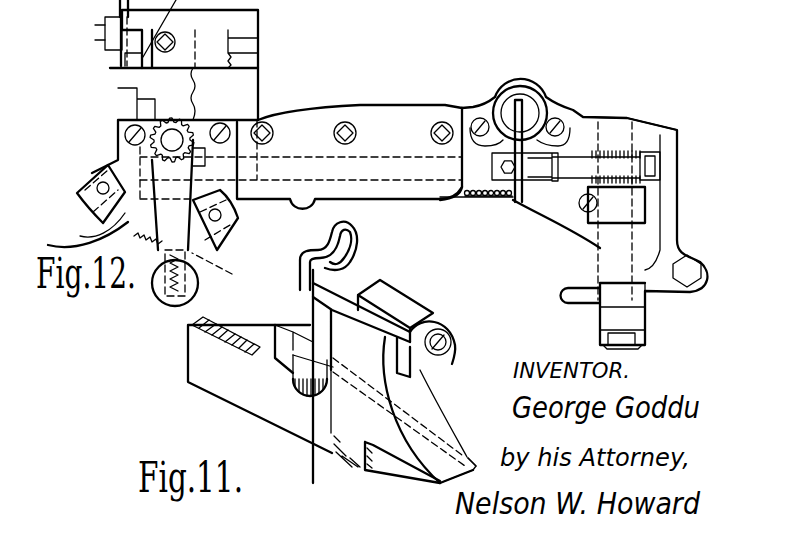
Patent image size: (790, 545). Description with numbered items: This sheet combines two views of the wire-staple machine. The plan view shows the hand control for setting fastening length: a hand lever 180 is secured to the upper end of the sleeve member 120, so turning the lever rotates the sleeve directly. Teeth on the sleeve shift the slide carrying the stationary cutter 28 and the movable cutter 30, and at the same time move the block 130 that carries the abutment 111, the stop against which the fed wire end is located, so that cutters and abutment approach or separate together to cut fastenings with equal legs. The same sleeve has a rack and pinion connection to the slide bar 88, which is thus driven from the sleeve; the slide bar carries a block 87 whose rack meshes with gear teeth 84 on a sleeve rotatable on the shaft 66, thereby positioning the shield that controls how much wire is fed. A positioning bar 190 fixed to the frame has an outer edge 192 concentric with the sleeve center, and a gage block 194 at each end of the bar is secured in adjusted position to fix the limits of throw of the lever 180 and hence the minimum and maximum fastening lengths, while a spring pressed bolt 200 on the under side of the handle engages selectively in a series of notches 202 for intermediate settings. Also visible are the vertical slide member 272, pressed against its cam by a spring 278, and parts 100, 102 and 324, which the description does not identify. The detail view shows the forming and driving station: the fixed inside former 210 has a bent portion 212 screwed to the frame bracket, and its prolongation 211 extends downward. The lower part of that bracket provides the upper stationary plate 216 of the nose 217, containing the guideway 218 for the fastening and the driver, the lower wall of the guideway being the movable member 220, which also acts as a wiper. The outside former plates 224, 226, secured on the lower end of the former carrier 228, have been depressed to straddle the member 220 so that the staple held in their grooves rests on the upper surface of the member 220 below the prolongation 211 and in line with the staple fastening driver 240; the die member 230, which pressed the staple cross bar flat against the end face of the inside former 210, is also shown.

In FIG. 12, the cutter 28 is at (112, 65).
In FIG. 12, the cutter 30 is at (110, 66).
In FIG. 12, the abutment 111 is at (134, 88).
In FIG. 12, the block 130 is at (148, 119).
In FIG. 12, the sleeve member 120 is at (172, 128).
In FIG. 12, the slide bar 88 is at (300, 160).
In FIG. 12, the gage block 194 is at (80, 200).
In FIG. 12, the positioning bar 190 is at (82, 236).
In FIG. 12, the outer edge 192 is at (50, 245).
In FIG. 12, the hand lever 180 is at (141, 239).
In FIG. 12, the spring pressed bolt 200 is at (227, 269).
In FIG. 12, the notches 202 is at (155, 252).
In FIG. 12, the vertical slide member 272 is at (537, 105).
In FIG. 12, the spring 278 is at (503, 200).
In FIG. 12, the shaft 66 is at (618, 125).
In FIG. 12, the block 87 is at (622, 168).
In FIG. 12, the gear teeth 84 is at (603, 217).
In FIG. 12, the lever 100 is at (577, 303).
In FIG. 12, the nut 102 is at (625, 313).
In FIG. 12, the part (cut off) 324 is at (619, 8).
In FIG. 11, the die member 230 is at (300, 276).
In FIG. 11, the plate 226 is at (311, 400).
In FIG. 12, the movable member 220 is at (478, 8).
In FIG. 11, the movable member 220 is at (215, 383).
In FIG. 11, the staple fastening driver 240 is at (203, 335).
In FIG. 11, the former carrier 228 is at (272, 342).
In FIG. 11, the plate 224 is at (290, 372).
In FIG. 12, the upper stationary plate 216 is at (521, 8).
In FIG. 11, the upper stationary plate 216 is at (415, 405).
In FIG. 11, the prolongation 211 is at (333, 367).
In FIG. 11, the inside former 210 is at (347, 292).
In FIG. 11, the bent portion 212 is at (428, 307).
In FIG. 11, the nose 217 is at (467, 452).
In FIG. 11, the guideway 218 is at (473, 458).